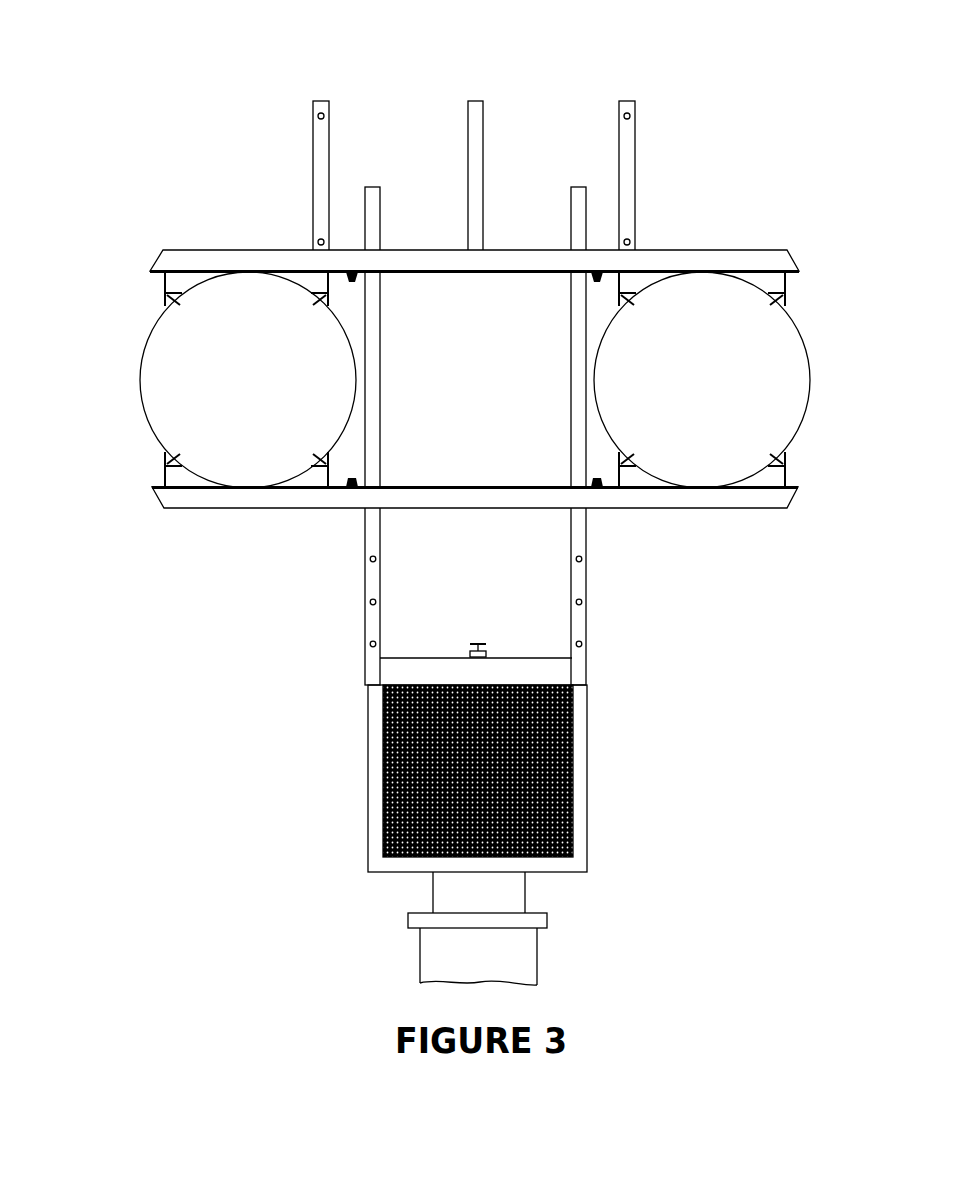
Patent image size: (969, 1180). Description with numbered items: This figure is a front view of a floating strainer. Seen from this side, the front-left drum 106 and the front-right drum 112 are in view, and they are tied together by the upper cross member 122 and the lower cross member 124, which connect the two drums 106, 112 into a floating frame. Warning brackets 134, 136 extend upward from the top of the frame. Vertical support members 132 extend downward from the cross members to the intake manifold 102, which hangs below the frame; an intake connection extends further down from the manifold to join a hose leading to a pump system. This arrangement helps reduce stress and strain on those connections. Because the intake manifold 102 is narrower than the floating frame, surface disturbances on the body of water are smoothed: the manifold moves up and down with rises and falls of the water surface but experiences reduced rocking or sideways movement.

The intake manifold 102 is at (582, 777).
The front-left drum 106 is at (157, 370).
The front-right drum 112 is at (802, 377).
The upper cross member 122 is at (167, 258).
The lower cross member 124 is at (163, 503).
The vertical support members 132 is at (365, 603).
The warning bracket 134 is at (325, 147).
The warning bracket 136 is at (472, 133).